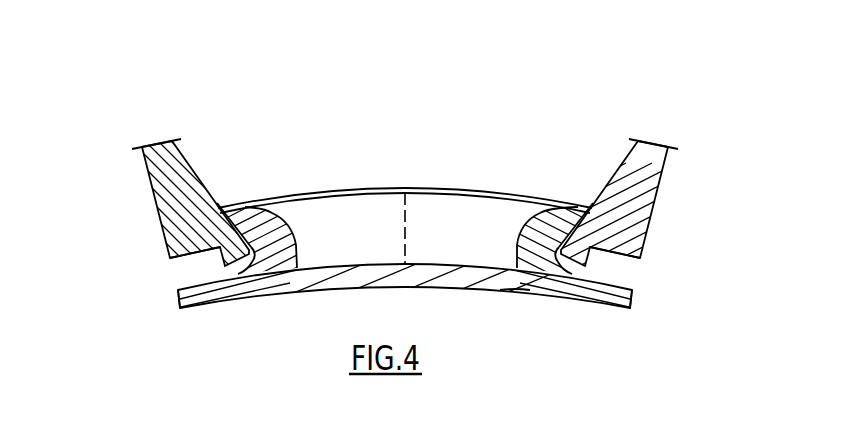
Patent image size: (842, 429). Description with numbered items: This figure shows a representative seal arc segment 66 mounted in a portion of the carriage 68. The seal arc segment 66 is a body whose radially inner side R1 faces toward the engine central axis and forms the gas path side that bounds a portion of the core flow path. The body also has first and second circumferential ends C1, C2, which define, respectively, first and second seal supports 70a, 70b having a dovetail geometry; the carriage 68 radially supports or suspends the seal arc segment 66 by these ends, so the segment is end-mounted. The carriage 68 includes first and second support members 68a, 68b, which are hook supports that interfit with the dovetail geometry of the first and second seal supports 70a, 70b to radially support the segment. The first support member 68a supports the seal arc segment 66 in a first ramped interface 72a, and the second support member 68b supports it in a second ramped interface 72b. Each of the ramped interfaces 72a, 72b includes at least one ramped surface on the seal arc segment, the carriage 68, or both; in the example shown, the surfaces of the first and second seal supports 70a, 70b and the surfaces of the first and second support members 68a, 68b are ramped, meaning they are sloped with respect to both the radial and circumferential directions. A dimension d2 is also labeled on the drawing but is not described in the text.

The seal arc segment 66 is at (258, 297).
The carriage 68 is at (149, 178).
The first support member 68a is at (612, 251).
The second support member 68b is at (198, 251).
The first seal support 70a is at (565, 263).
The second seal support 70b is at (245, 263).
The first ramped interface 72a is at (570, 228).
The second ramped interface 72b is at (240, 228).
The diameter d2 is at (405, 193).
The radially inner side R1 is at (516, 291).
The first circumferential end C1 is at (643, 280).
The second circumferential end C2 is at (172, 287).